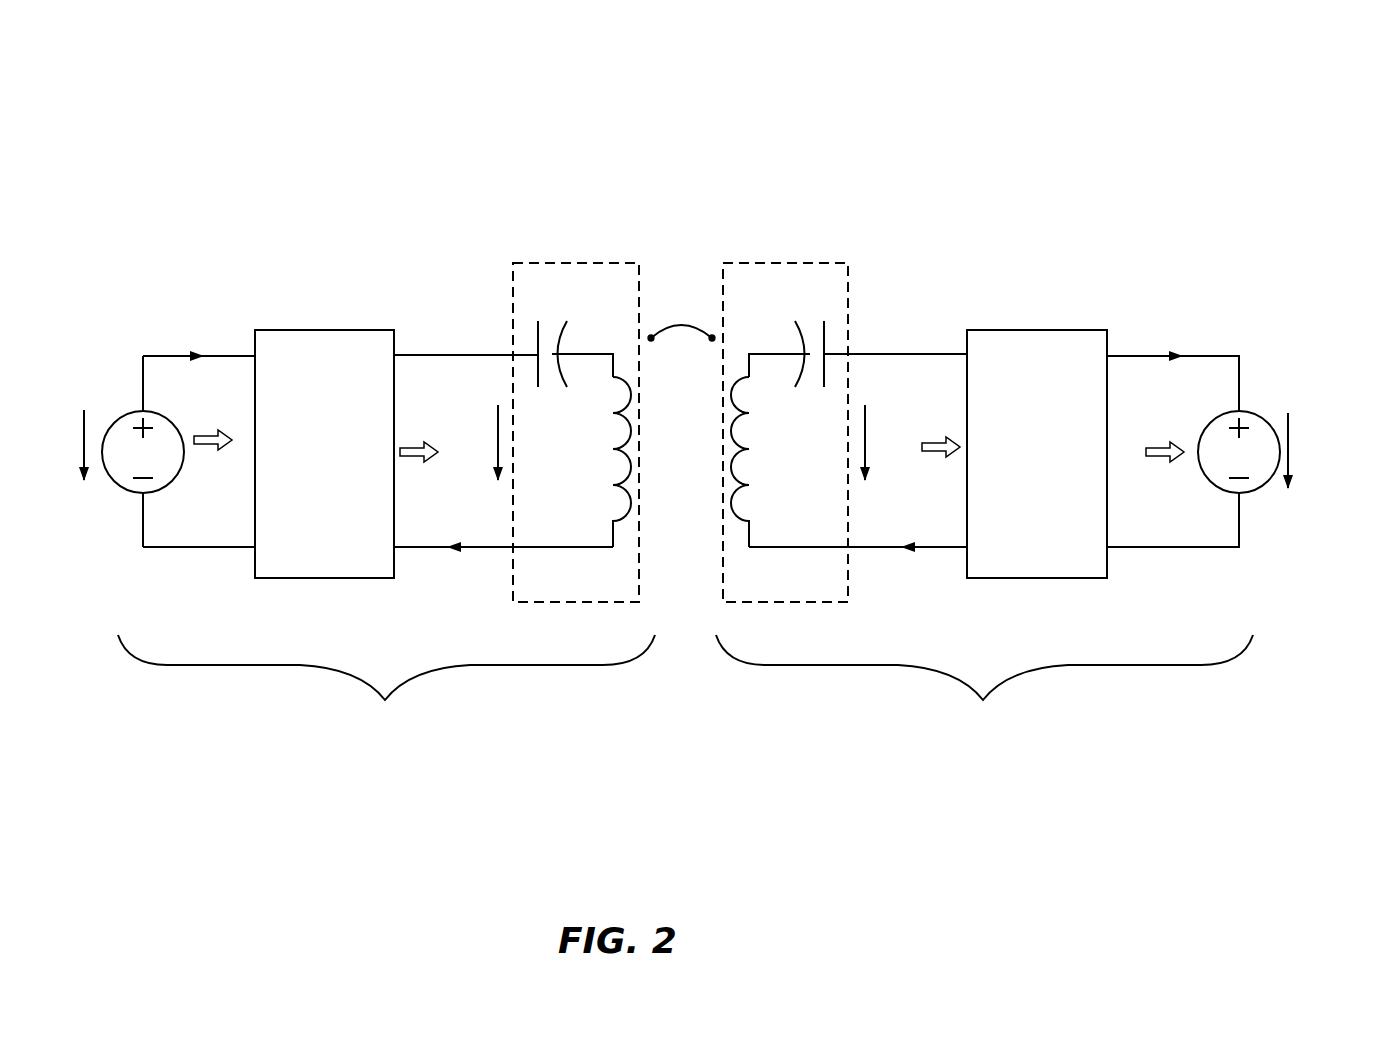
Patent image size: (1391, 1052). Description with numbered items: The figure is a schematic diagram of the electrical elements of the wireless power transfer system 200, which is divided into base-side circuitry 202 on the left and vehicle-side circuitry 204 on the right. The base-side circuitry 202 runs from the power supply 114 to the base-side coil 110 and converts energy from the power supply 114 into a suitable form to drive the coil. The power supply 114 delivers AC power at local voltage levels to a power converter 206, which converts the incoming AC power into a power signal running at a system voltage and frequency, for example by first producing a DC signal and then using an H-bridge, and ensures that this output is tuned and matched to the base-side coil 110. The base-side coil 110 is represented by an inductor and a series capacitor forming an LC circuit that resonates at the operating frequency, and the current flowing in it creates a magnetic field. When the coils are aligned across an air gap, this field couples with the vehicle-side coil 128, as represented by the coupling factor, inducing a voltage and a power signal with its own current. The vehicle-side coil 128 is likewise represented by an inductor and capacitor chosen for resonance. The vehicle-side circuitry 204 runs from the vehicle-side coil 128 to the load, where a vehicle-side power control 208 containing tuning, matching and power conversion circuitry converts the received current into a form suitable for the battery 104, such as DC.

The wireless power transfer system 200 is at (1295, 80).
The base-side circuitry 202 is at (349, 478).
The vehicle-side circuitry 204 is at (1004, 478).
The power converter 206 is at (322, 330).
The vehicle-side power control 208 is at (987, 330).
The base-side coil 110 is at (530, 263).
The vehicle-side coil 128 is at (752, 263).
The power supply 114 is at (125, 410).
The battery 104 is at (1252, 408).